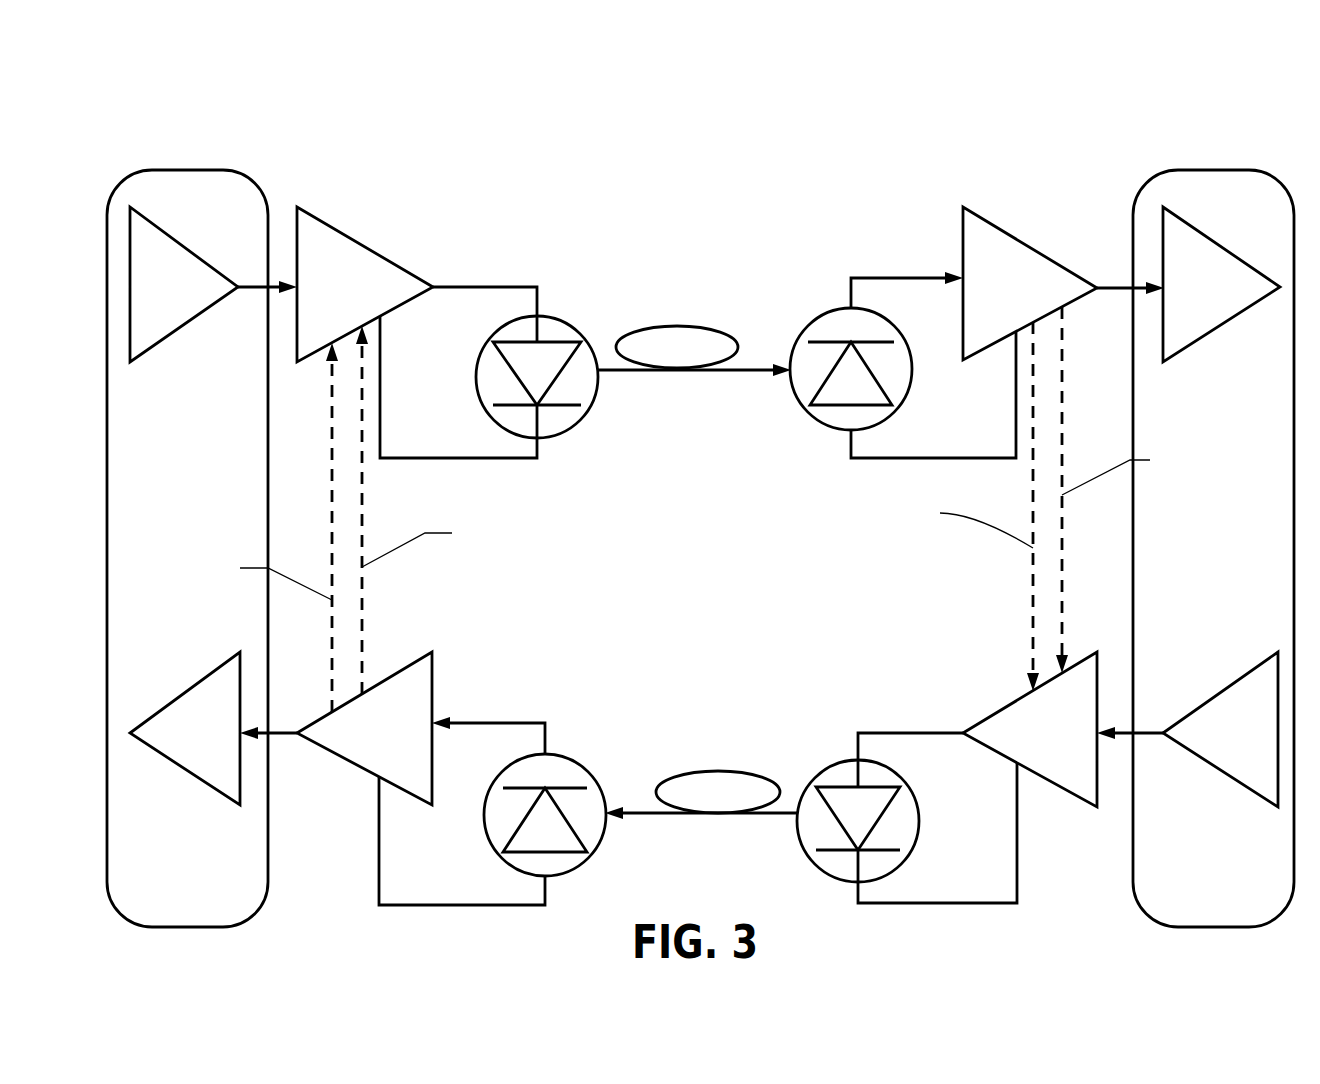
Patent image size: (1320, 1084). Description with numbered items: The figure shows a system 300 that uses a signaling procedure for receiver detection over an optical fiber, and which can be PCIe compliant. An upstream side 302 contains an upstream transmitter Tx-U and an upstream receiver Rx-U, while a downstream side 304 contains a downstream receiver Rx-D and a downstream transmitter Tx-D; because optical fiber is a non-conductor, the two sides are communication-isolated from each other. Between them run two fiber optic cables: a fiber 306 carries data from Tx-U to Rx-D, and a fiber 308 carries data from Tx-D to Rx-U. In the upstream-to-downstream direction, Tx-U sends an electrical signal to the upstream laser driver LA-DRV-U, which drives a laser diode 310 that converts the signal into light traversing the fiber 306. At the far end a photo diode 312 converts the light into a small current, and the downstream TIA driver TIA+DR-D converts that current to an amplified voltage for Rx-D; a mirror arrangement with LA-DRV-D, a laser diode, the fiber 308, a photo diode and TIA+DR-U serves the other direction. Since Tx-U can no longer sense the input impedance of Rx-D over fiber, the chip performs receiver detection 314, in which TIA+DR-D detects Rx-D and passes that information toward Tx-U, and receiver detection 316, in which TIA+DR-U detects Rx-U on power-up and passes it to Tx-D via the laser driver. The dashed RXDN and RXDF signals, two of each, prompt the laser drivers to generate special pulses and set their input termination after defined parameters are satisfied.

The system 300 is at (284, 72).
The upstream side 302 is at (212, 170).
The downstream side 304 is at (1220, 170).
The fiber 306 is at (686, 327).
The fiber 308 is at (722, 771).
The laser diode 310 is at (556, 340).
The photo diode 312 is at (828, 408).
The receiver detection 314 is at (1114, 288).
The receiver detection 316 is at (290, 736).